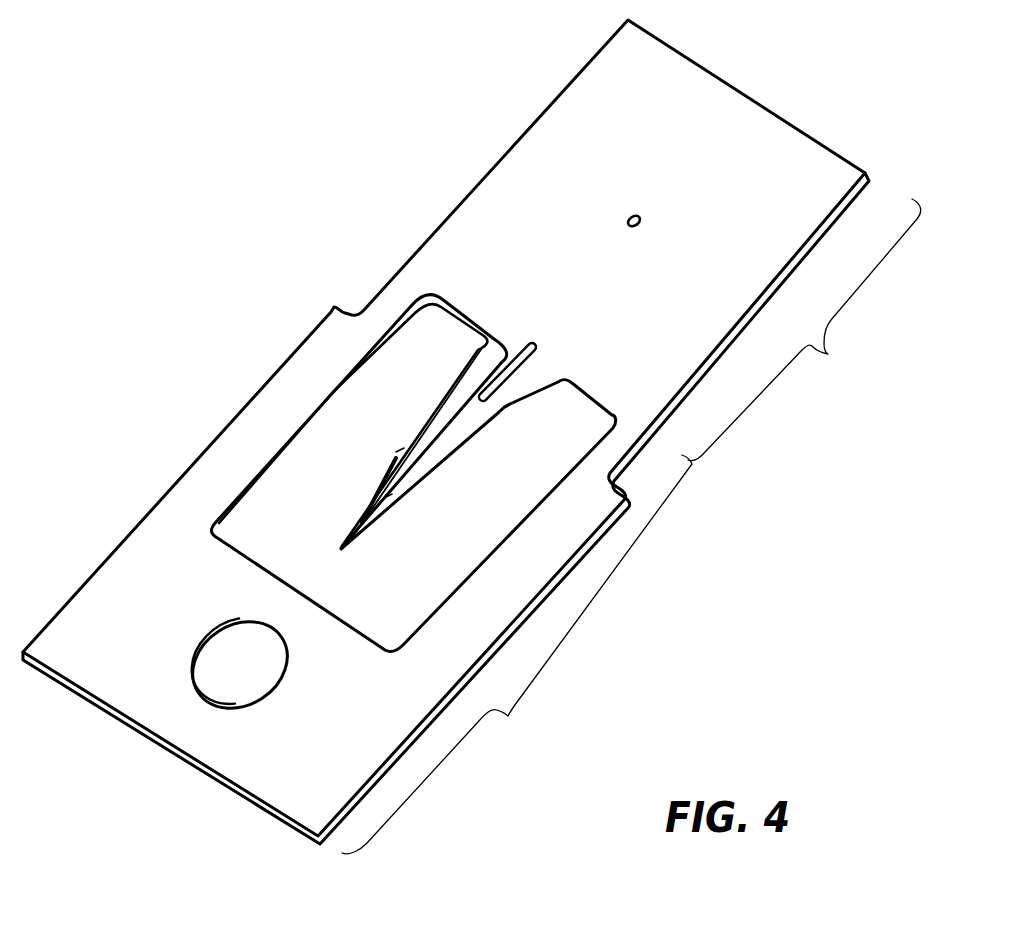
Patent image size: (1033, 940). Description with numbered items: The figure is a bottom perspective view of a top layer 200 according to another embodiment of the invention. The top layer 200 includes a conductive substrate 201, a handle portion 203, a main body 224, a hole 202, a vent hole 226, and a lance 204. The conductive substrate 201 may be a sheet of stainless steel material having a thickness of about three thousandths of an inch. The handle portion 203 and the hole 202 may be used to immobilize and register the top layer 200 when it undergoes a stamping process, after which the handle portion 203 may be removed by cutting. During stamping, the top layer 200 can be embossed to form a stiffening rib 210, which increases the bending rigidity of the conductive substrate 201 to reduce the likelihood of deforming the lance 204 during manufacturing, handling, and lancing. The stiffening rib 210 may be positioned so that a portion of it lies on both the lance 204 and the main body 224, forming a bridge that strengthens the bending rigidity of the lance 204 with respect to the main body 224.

The top layer 200 is at (211, 208).
The conductive substrate 201 is at (645, 400).
The hole 202 is at (232, 666).
The handle portion 203 is at (517, 654).
The lance 204 is at (440, 417).
The stiffening rib 210 is at (533, 345).
The main body 224 is at (804, 330).
The vent hole 226 is at (632, 215).